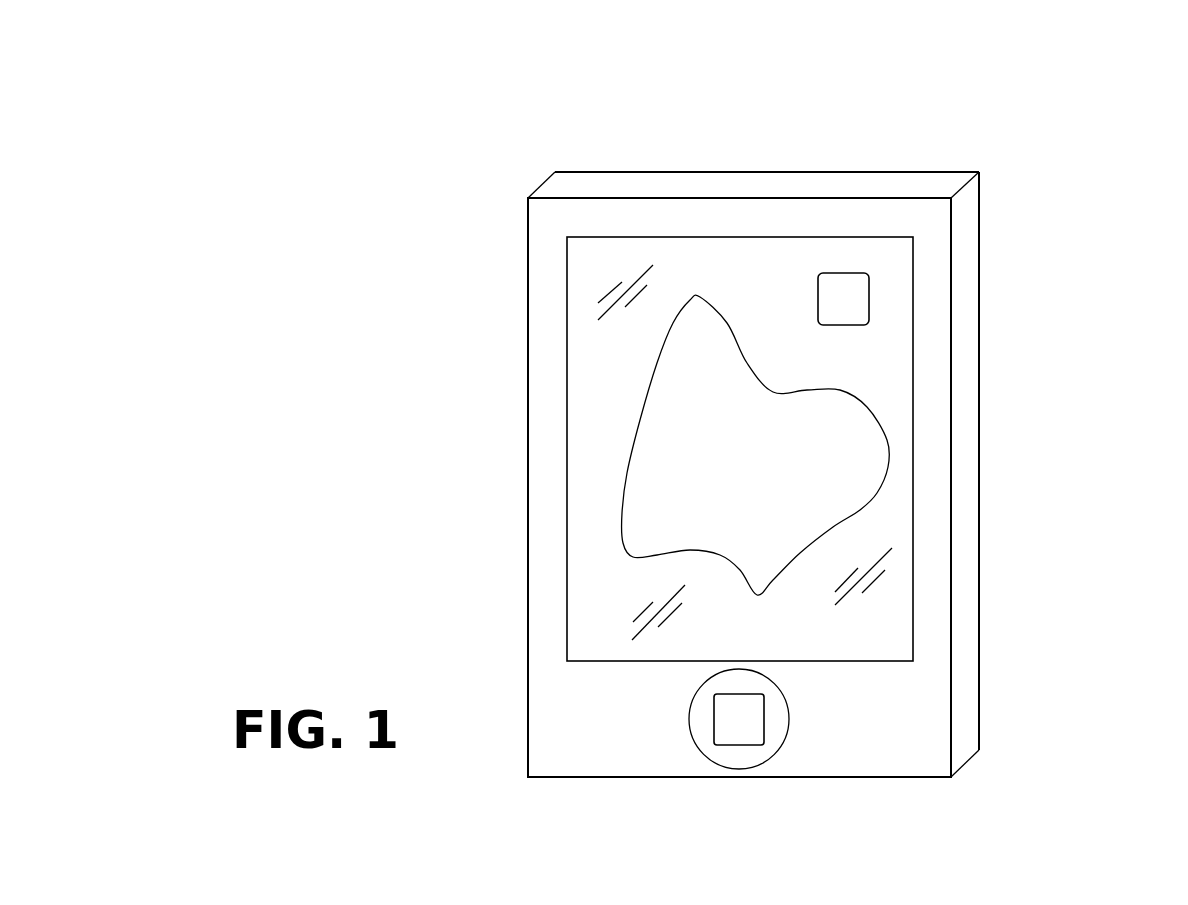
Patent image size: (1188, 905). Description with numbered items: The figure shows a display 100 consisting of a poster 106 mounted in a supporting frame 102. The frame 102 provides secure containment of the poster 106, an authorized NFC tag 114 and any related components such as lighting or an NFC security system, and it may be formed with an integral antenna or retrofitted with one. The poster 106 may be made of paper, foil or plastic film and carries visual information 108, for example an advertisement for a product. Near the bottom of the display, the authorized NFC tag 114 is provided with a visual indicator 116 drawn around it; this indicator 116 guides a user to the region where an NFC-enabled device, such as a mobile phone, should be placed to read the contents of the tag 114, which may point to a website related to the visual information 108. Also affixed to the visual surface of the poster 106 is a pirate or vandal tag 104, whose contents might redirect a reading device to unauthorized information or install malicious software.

The display 100 is at (505, 378).
The supporting frame 102 is at (638, 180).
The vandal tag 104 is at (845, 272).
The poster 106 is at (913, 385).
The visual information 108 is at (858, 512).
The authorized NFC tag 114 is at (764, 720).
The visual indicator 116 is at (692, 727).